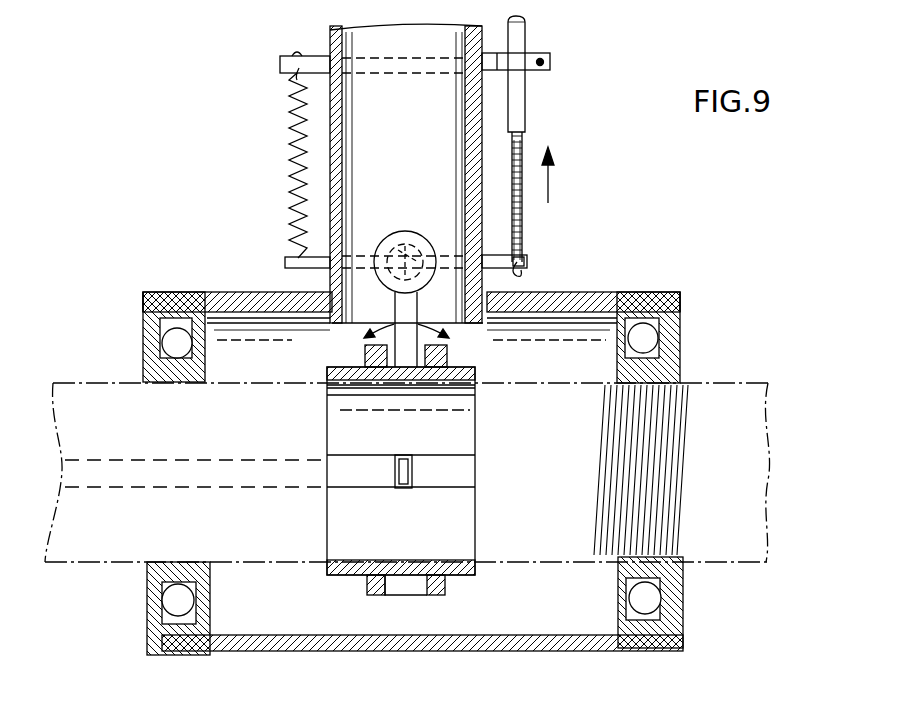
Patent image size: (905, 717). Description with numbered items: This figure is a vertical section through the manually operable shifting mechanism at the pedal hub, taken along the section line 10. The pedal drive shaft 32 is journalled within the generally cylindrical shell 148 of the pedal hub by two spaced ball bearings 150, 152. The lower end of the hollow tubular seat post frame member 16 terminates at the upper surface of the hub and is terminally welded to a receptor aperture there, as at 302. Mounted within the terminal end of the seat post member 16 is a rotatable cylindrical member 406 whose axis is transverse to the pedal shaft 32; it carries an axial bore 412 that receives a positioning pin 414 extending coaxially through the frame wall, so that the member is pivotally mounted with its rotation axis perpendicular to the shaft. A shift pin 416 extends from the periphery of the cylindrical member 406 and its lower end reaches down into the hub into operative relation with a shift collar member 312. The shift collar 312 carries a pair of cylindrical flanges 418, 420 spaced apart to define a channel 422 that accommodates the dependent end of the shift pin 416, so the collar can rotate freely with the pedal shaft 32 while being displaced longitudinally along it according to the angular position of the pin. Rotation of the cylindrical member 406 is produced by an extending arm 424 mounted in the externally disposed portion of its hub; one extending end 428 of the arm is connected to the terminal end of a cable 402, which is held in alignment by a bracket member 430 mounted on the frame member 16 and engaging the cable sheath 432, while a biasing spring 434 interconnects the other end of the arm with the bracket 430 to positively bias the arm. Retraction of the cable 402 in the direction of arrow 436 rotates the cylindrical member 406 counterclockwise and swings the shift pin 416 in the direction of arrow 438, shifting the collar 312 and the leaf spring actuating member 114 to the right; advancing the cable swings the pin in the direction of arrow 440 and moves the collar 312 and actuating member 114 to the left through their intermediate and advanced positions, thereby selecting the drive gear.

The section line 10 is at (405, 97).
The seat post frame member 16 is at (478, 217).
The pedal drive shaft 32 is at (728, 374).
The leaf spring actuating member 114 is at (233, 431).
The cylindrical shell 148 is at (597, 291).
The ball bearing 150 is at (177, 339).
The ball bearing 152 is at (650, 336).
The weld 302 is at (330, 298).
The shift collar member 312 is at (318, 574).
The cable 402 is at (523, 218).
The rotatable cylindrical member 406 is at (383, 249).
The axial bore 412 is at (426, 245).
The positioning pin 414 is at (415, 236).
The shift pin 416 is at (404, 309).
The cylindrical flange 418 is at (369, 594).
The cylindrical flange 420 is at (447, 588).
The channel 422 is at (407, 593).
The extending arm 424 is at (497, 249).
The extending end 428 is at (536, 261).
The bracket member 430 is at (526, 53).
The cable sheath 432 is at (526, 92).
The biasing spring 434 is at (291, 152).
The arrow 436 is at (553, 164).
The arrow 438 is at (378, 339).
The arrow 440 is at (430, 327).